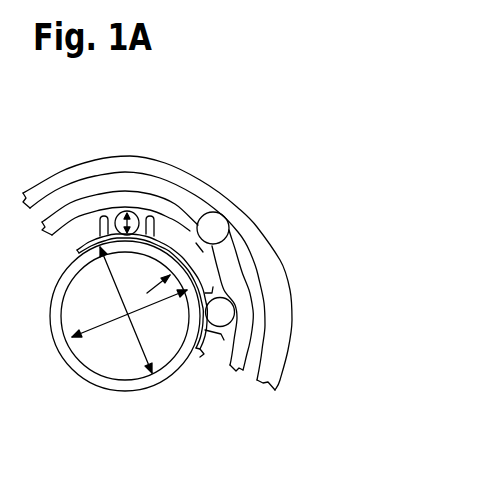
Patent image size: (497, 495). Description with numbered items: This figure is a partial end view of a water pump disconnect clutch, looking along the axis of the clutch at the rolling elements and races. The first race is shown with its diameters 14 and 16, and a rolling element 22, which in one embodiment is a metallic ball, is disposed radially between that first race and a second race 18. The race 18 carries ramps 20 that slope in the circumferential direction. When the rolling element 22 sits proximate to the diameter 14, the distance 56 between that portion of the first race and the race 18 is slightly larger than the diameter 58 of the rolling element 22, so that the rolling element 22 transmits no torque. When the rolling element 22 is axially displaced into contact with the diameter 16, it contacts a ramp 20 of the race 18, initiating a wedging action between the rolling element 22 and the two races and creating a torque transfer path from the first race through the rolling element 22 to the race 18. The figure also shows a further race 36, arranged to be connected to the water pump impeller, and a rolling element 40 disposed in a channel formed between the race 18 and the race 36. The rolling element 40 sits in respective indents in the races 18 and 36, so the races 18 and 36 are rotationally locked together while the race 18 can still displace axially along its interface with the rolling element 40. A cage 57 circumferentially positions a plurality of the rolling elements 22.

The diameter 14 is at (100, 323).
The diameter 16 is at (147, 350).
The race 18 is at (107, 200).
The ramps 20 is at (232, 270).
The rolling element 22 is at (223, 313).
The race 36 is at (72, 178).
The rolling element 40 is at (217, 230).
The distance 56 is at (192, 250).
The cage 57 is at (201, 360).
The diameter 58 is at (139, 215).